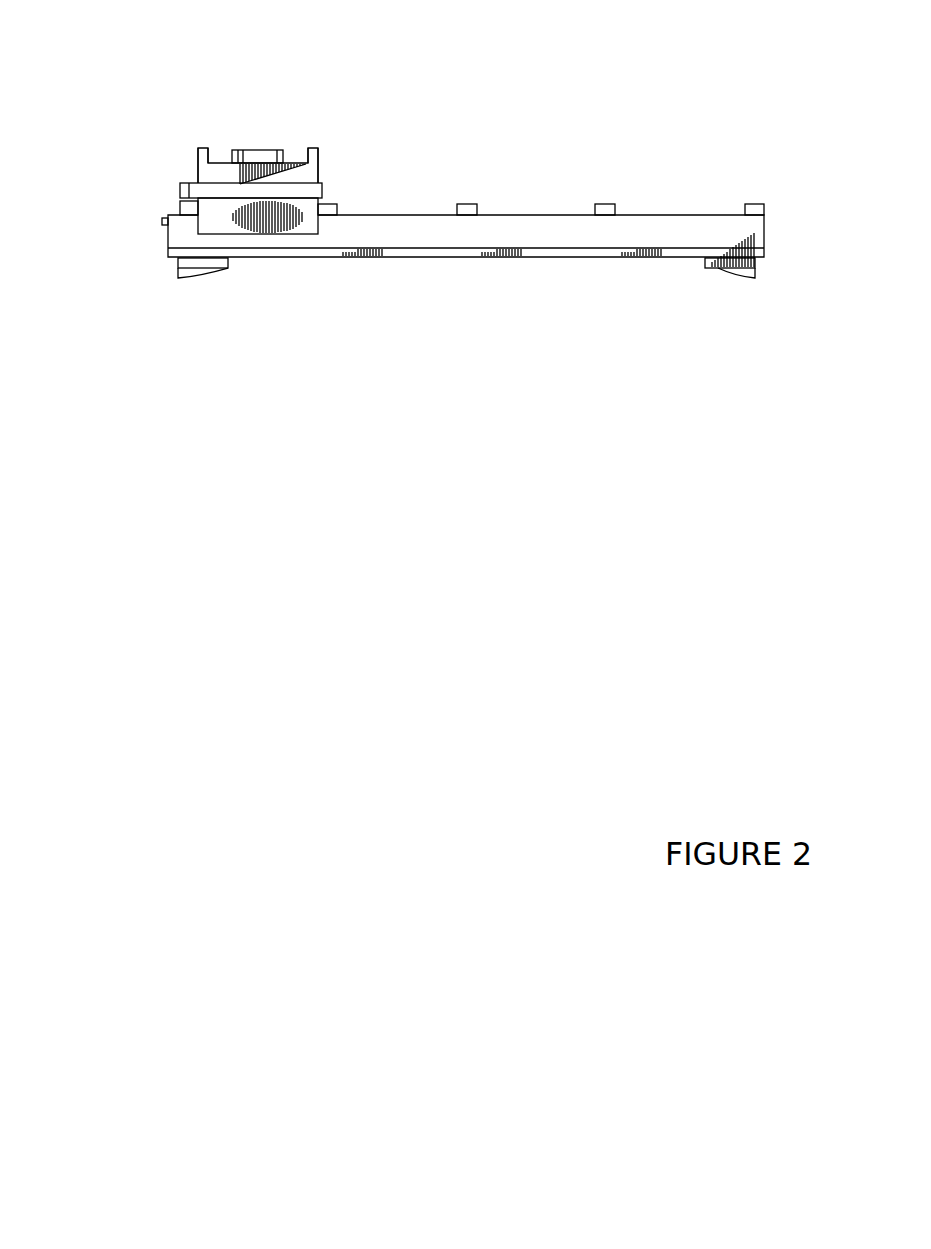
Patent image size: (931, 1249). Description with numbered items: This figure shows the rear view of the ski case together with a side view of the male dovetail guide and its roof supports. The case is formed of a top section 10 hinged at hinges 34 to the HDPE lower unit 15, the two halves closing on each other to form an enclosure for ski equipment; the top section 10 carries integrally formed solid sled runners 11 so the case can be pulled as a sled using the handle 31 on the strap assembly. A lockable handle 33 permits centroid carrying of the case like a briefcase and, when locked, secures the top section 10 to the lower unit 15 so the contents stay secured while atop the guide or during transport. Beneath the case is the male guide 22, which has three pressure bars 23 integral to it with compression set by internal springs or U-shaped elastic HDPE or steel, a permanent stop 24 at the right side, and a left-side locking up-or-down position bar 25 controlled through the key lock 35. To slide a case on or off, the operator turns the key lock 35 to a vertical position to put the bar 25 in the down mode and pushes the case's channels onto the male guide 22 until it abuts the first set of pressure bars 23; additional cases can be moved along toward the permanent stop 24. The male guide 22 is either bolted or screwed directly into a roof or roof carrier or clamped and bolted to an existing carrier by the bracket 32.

The top section of the case 10 is at (293, 185).
The sled runners 11 is at (202, 148).
The lower unit 15 is at (296, 229).
The male guide 22 is at (463, 260).
The pressure bars 23 is at (328, 203).
The permanent stop 24 is at (757, 204).
The locking position bar 25 is at (179, 212).
The handle 31 is at (263, 150).
The bracket 32 is at (203, 270).
The lockable handle 33 is at (181, 197).
The hinges 34 is at (322, 195).
The key lock 35 is at (162, 221).